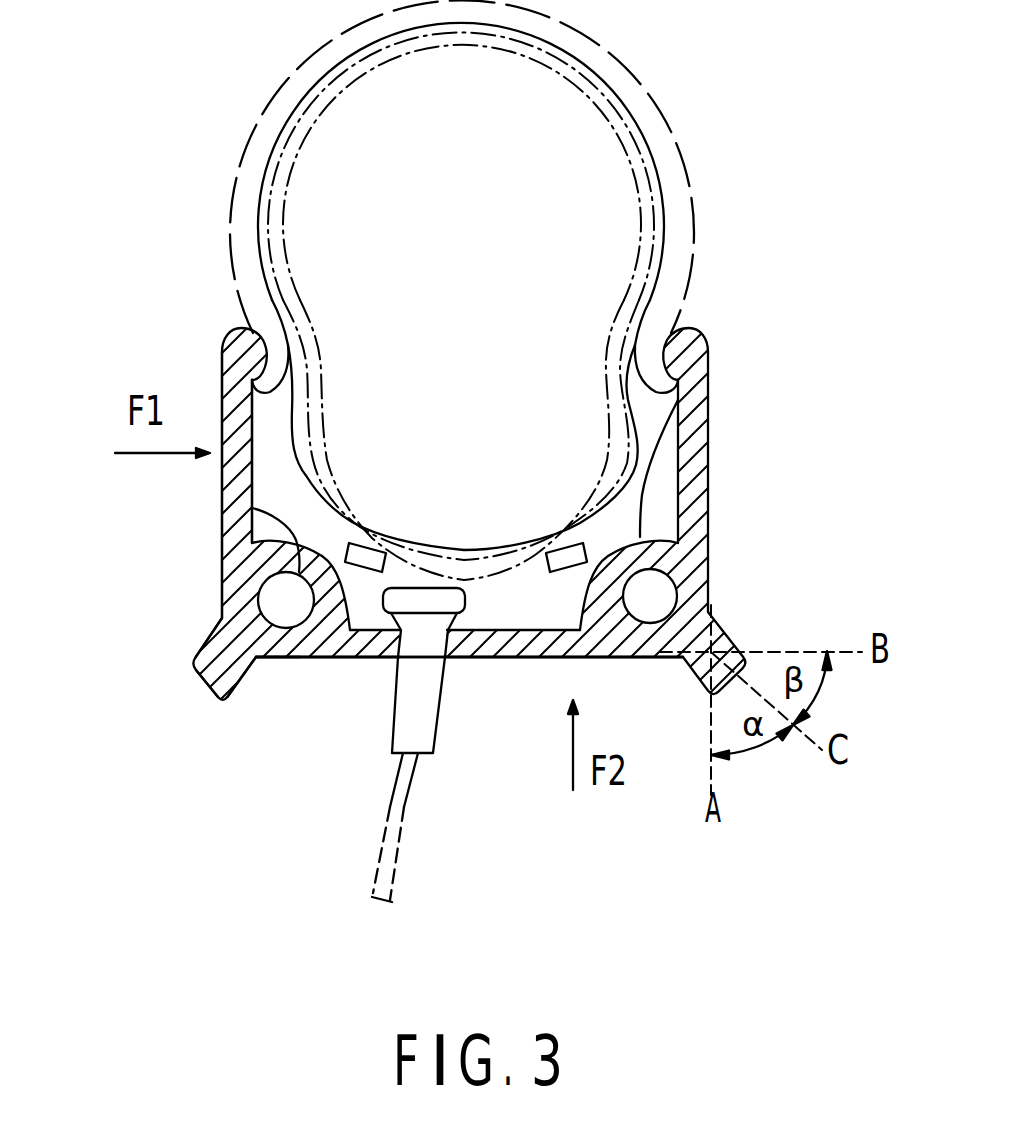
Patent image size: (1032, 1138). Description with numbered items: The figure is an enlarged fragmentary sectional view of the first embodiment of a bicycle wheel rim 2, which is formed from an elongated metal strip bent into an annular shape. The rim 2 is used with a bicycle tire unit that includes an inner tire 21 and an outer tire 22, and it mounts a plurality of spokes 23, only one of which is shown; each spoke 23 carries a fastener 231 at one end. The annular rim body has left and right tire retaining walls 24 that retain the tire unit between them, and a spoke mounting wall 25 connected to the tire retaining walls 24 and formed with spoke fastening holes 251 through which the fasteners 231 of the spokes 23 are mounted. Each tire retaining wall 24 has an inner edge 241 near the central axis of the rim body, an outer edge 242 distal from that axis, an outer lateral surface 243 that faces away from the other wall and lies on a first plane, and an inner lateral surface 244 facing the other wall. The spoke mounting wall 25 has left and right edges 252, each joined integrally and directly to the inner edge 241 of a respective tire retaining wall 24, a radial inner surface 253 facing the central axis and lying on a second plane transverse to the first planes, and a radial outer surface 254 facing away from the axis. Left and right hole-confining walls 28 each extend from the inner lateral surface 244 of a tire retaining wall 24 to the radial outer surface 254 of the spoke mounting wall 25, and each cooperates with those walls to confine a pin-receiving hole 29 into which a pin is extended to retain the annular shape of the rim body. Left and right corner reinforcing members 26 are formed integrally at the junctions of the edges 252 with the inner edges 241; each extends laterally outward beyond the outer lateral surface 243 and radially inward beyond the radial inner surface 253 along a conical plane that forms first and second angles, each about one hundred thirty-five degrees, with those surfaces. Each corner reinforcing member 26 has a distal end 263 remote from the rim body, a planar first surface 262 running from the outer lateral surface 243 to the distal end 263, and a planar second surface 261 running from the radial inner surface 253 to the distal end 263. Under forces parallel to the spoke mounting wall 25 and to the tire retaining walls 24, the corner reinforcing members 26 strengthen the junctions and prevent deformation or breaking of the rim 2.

The bicycle wheel rim 2 is at (717, 420).
The inner tire 21 is at (645, 170).
The outer tire 22 is at (636, 76).
The spoke 23 is at (412, 790).
The fastener 231 is at (415, 685).
The tire retaining wall 24 is at (237, 472).
The inner edge 241 is at (243, 632).
The outer edge 242 is at (252, 333).
The outer lateral surface 243 is at (222, 530).
The inner lateral surface 244 is at (253, 457).
The spoke mounting wall 25 is at (562, 638).
The spoke fastening hole 251 is at (380, 660).
The left and right edges 252 is at (287, 660).
The radial inner surface 253 is at (515, 662).
The radial outer surface 254 is at (518, 630).
The corner reinforcing member 26 is at (218, 690).
The second surface 261 is at (257, 672).
The first surface 262 is at (216, 634).
The distal end 263 is at (190, 683).
The hole-confining wall 28 is at (258, 553).
The pin-receiving hole 29 is at (303, 617).